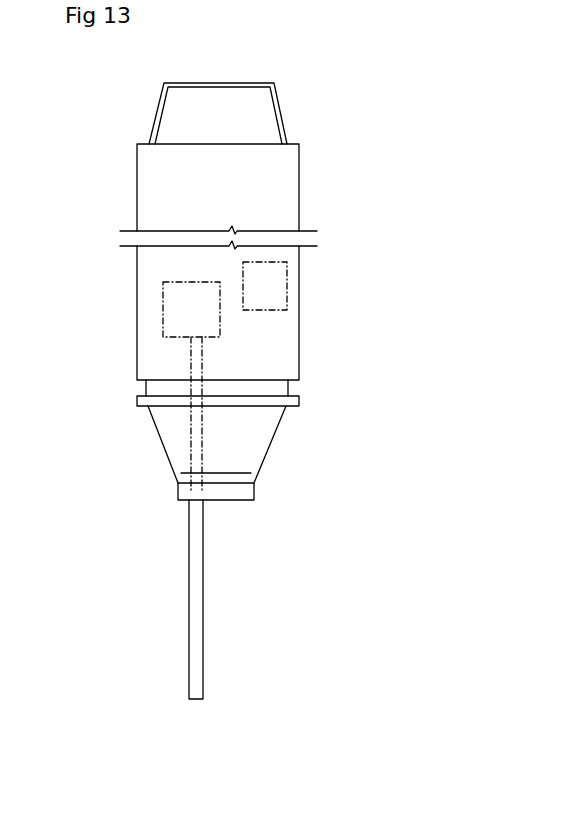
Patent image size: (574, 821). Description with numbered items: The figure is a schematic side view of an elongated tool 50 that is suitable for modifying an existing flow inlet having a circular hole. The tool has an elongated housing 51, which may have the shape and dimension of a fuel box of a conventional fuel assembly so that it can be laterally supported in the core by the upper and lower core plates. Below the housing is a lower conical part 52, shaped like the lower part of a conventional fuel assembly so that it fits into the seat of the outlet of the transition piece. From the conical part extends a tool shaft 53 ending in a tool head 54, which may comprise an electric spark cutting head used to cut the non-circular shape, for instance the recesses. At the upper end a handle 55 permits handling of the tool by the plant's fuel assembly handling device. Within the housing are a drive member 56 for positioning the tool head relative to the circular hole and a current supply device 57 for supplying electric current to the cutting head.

The elongated tool 50 is at (116, 172).
The elongated housing 51 is at (144, 253).
The lower conical part 52 is at (173, 459).
The tool shaft 53 is at (197, 583).
The tool head 54 is at (213, 690).
The handle 55 is at (152, 120).
The drive member 56 is at (178, 306).
The current supply device 57 is at (252, 269).